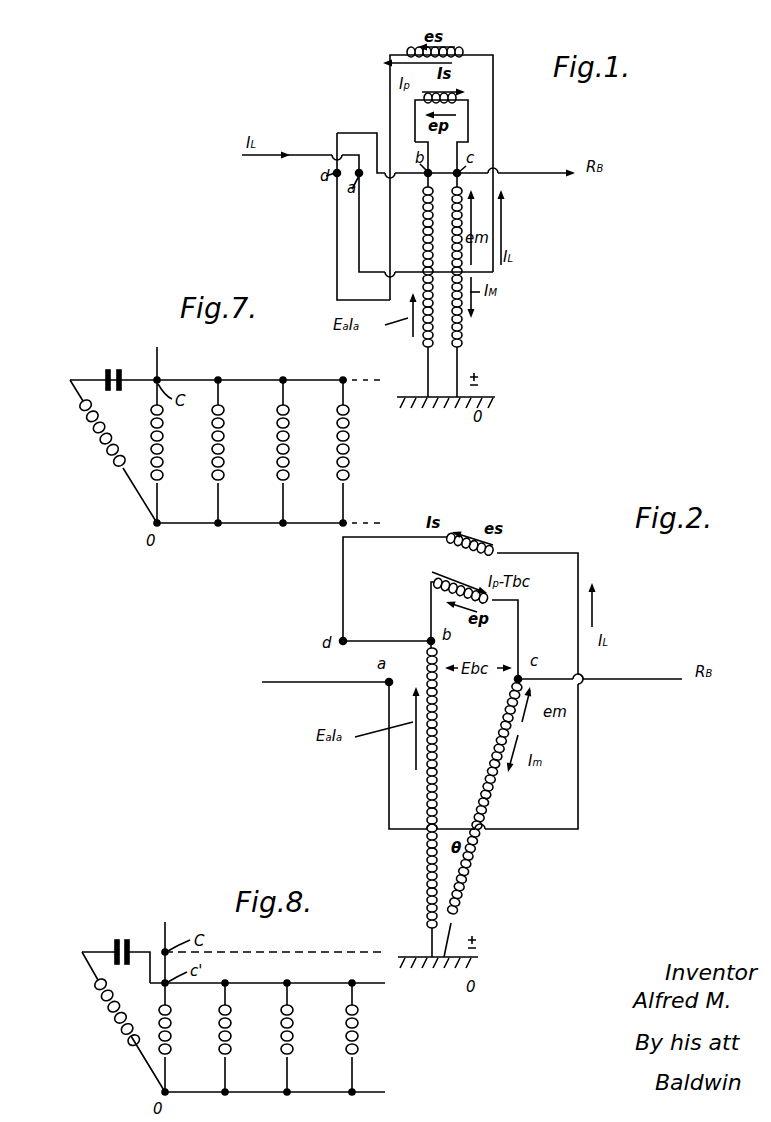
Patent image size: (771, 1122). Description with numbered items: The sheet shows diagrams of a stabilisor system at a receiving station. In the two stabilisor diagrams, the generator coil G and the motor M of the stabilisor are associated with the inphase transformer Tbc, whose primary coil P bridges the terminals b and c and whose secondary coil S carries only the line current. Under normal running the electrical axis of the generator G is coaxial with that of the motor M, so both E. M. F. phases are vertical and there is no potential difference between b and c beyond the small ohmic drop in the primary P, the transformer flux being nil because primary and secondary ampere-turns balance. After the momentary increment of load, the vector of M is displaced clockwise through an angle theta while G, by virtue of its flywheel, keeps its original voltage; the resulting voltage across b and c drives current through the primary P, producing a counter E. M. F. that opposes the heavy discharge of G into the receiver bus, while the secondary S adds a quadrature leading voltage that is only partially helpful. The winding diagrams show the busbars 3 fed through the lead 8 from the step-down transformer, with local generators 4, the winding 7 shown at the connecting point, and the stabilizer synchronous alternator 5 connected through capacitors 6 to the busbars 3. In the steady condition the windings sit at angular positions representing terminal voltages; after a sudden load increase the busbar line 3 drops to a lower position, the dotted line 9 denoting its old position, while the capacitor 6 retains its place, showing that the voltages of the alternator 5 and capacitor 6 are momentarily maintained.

In FIG. 7, the busbars 3 is at (195, 381).
In FIG. 8, the busbars 3 is at (321, 983).
In FIG. 7, the local generators 4 is at (225, 453).
In FIG. 8, the local generators 4 is at (231, 1040).
In FIG. 7, the synchronous alternator 5 is at (114, 464).
In FIG. 8, the synchronous alternator 5 is at (123, 1022).
In FIG. 7, the capacitors 6 is at (112, 370).
In FIG. 8, the capacitors 6 is at (120, 937).
In FIG. 7, the reactance coil 7 is at (150, 442).
In FIG. 8, the reactance coil 7 is at (171, 1032).
In FIG. 7, the lead from the step-down transformer 8 is at (160, 356).
In FIG. 8, the lead from the step-down transformer 8 is at (168, 929).
In FIG. 8, the dotted line 9 is at (282, 957).
In FIG. 1, the generator coil of stabilisor G is at (423, 350).
In FIG. 2, the generator coil of stabilisor G is at (422, 800).
In FIG. 1, the motor of stabilisor M is at (465, 342).
In FIG. 2, the motor of stabilisor M is at (500, 793).
In FIG. 1, the inphase transformer Tbc is at (486, 121).
In FIG. 2, the secondary coil S is at (505, 549).
In FIG. 2, the primary coil P is at (435, 580).